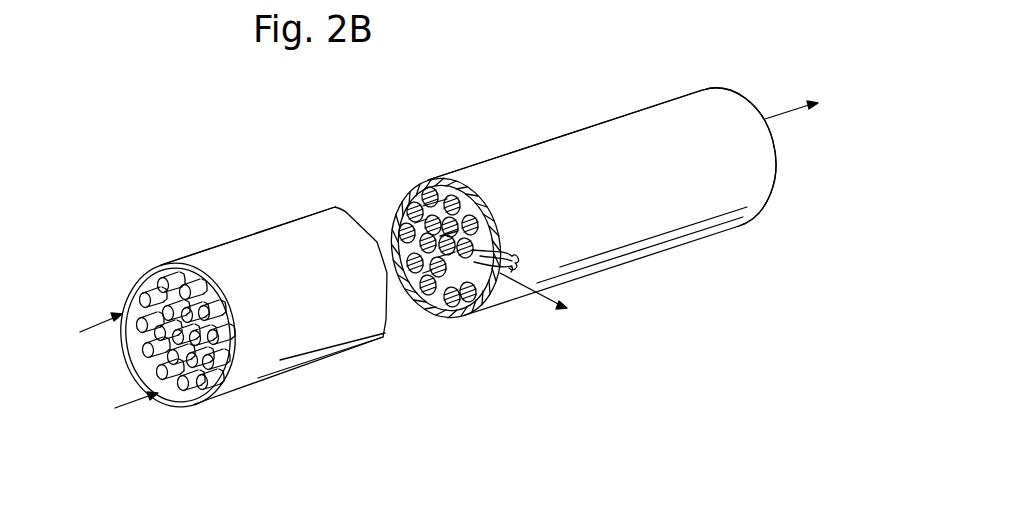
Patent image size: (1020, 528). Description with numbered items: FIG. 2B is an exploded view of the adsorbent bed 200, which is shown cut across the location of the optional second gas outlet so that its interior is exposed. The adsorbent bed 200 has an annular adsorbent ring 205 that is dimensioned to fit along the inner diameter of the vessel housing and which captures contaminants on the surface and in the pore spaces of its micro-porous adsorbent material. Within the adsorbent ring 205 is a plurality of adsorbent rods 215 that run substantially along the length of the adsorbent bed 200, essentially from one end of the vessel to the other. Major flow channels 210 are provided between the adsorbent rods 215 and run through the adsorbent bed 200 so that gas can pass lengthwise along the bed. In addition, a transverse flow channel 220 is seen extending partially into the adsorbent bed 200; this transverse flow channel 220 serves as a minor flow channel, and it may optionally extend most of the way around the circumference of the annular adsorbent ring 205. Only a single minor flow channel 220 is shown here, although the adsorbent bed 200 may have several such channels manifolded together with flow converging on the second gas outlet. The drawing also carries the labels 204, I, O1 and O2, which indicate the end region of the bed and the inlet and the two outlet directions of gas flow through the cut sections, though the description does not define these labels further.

The adsorbent bed 200 is at (228, 190).
The end cap 204 is at (733, 93).
The annular adsorbent ring 205 is at (524, 145).
The flow channels 210 is at (425, 183).
The adsorbent rods 215 is at (170, 278).
The transverse flow channel 220 is at (512, 258).
The input light I is at (93, 323).
The first output O1 is at (778, 112).
The second output O2 is at (514, 322).